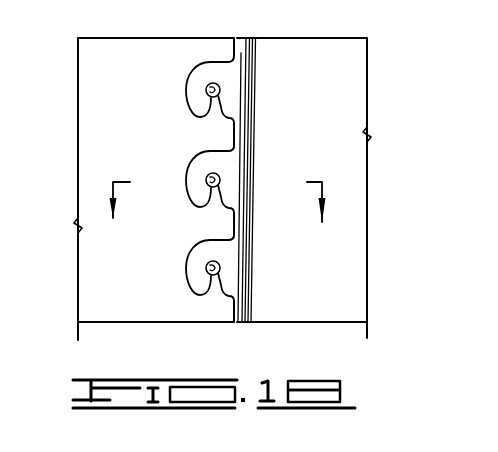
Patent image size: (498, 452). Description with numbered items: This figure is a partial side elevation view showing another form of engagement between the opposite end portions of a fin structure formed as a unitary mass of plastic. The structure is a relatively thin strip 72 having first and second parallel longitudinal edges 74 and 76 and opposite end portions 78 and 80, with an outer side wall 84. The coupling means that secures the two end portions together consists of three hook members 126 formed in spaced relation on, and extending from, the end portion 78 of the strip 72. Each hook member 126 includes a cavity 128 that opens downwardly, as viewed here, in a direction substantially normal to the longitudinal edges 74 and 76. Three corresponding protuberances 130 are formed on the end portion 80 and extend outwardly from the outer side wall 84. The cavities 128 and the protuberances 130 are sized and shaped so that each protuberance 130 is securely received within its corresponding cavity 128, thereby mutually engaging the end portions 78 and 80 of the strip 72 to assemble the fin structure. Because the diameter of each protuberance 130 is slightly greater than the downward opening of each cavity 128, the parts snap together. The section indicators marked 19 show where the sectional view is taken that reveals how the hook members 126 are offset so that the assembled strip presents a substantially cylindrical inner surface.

The section line 19- 19 is at (219, 203).
The strip 72 is at (355, 50).
The first longitudinal edge 74 is at (285, 325).
The second longitudinal edge 76 is at (295, 37).
The end portion 78 is at (262, 48).
The end portion 80 is at (218, 45).
The outer side wall 84 is at (90, 51).
The hook member 126 is at (197, 71).
The cavity 128 is at (208, 88).
The protuberance 130 is at (219, 105).